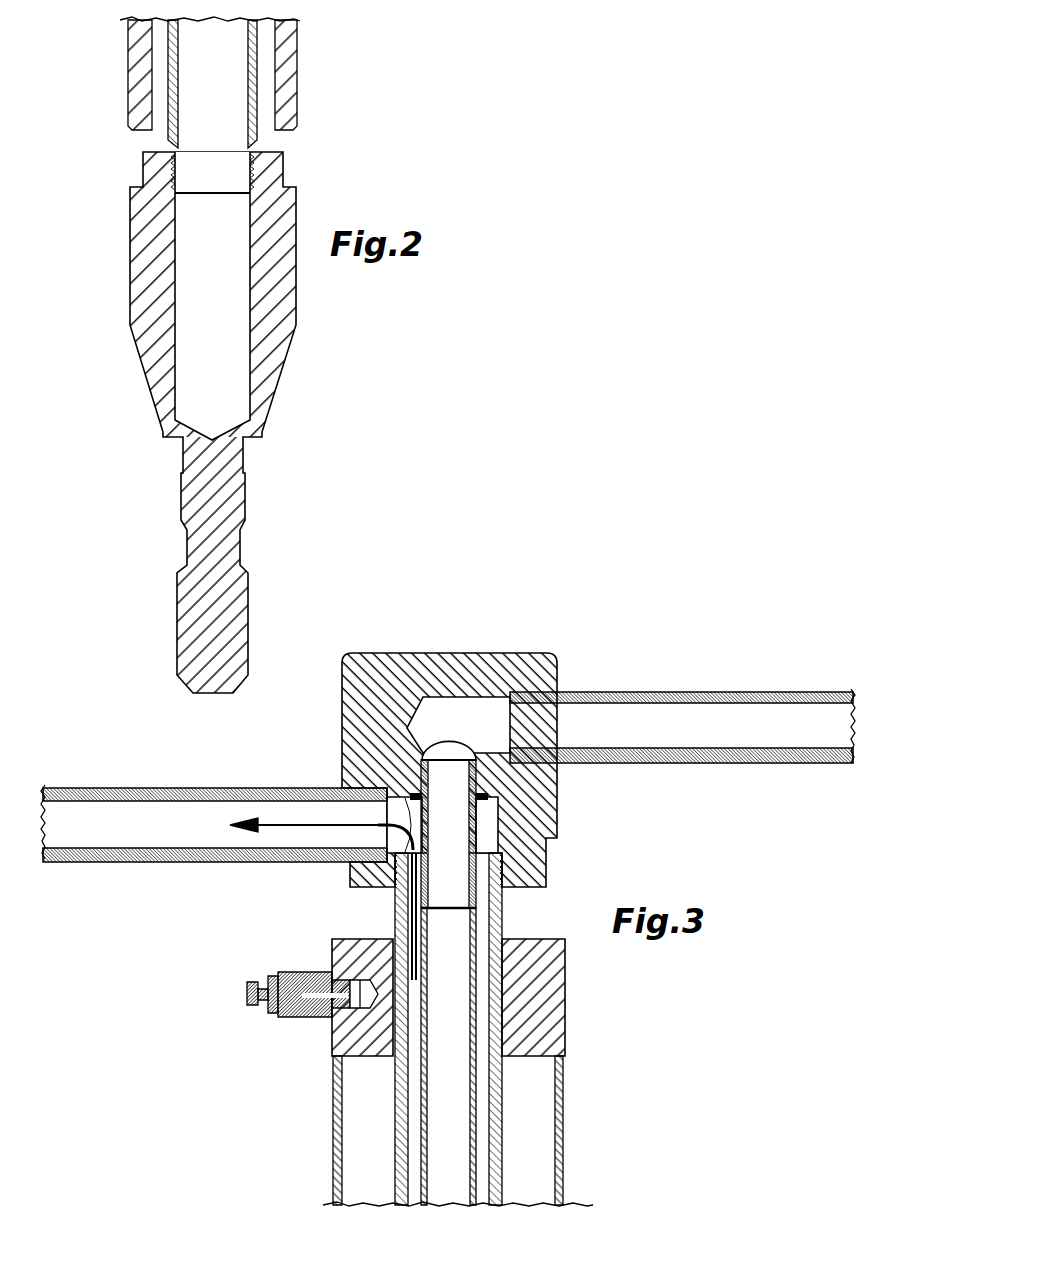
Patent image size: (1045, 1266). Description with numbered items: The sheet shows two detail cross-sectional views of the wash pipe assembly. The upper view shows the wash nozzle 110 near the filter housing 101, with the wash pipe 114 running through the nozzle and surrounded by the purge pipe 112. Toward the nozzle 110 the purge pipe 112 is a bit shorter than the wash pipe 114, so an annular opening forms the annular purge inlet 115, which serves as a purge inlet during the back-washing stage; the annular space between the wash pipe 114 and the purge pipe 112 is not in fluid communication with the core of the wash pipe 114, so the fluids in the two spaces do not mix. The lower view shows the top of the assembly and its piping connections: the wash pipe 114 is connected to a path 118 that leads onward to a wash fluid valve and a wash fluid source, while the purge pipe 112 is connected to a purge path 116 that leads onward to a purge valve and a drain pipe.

In FIG. 2, the filter housing 101 is at (290, 82).
In FIG. 2, the wash pipe 114 is at (258, 48).
In FIG. 3, the wash pipe 114 is at (420, 1133).
In FIG. 2, the annular purge inlet 115 is at (270, 131).
In FIG. 2, the wash nozzle 110 is at (288, 313).
In FIG. 3, the purge pipe 112 is at (500, 1112).
In FIG. 3, the purge path 116 is at (179, 788).
In FIG. 3, the path 118 is at (717, 692).